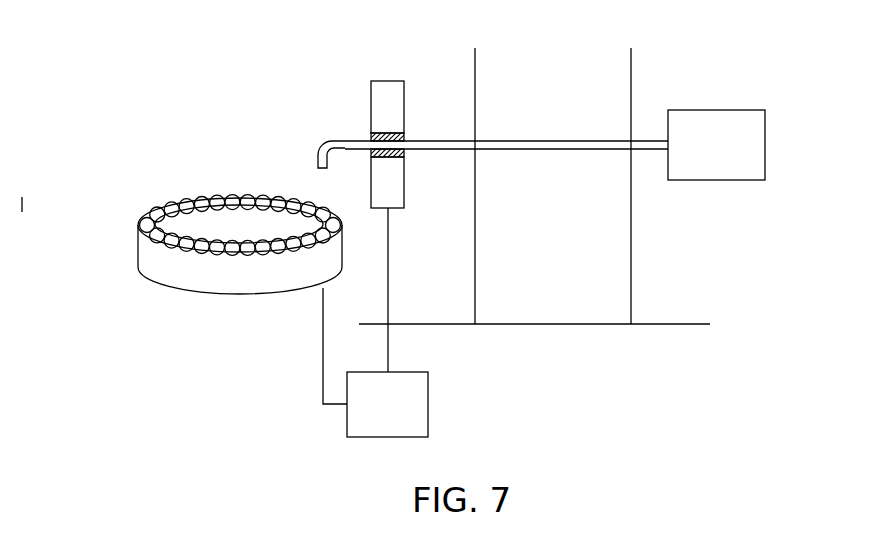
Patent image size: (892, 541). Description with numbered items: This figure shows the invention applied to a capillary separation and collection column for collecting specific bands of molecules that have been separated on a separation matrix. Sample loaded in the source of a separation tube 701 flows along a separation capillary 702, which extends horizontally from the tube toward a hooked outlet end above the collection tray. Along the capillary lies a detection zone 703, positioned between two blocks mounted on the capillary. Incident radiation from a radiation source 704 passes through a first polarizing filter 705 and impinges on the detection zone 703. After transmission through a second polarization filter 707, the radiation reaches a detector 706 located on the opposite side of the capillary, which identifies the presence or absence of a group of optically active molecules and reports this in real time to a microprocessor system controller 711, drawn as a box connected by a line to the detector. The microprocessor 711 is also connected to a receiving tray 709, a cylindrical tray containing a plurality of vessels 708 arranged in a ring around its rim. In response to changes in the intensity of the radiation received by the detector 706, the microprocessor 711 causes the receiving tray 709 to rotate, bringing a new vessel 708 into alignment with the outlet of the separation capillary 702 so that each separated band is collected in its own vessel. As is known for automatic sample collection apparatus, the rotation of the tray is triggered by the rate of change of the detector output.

The separation tube 701 is at (765, 132).
The separation capillary 702 is at (535, 140).
The detection zone 703 is at (405, 140).
The radiation source 704 is at (392, 89).
The first polarizing filter 705 is at (370, 135).
The detector 706 is at (393, 198).
The second polarization filter 707 is at (405, 154).
The vessels 708 is at (140, 222).
The receiving tray 709 is at (217, 283).
The microprocessor system controller 711 is at (410, 418).